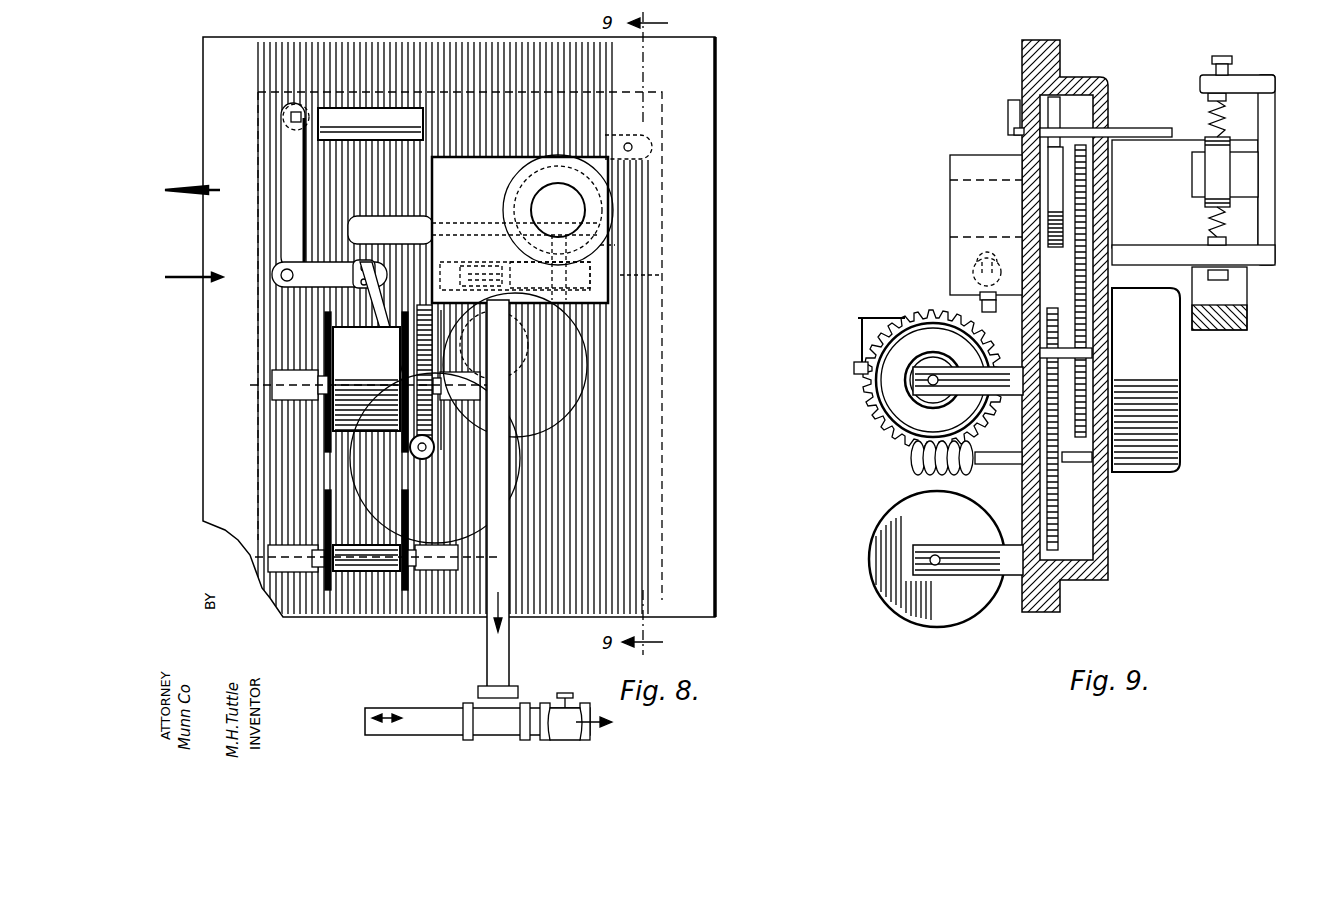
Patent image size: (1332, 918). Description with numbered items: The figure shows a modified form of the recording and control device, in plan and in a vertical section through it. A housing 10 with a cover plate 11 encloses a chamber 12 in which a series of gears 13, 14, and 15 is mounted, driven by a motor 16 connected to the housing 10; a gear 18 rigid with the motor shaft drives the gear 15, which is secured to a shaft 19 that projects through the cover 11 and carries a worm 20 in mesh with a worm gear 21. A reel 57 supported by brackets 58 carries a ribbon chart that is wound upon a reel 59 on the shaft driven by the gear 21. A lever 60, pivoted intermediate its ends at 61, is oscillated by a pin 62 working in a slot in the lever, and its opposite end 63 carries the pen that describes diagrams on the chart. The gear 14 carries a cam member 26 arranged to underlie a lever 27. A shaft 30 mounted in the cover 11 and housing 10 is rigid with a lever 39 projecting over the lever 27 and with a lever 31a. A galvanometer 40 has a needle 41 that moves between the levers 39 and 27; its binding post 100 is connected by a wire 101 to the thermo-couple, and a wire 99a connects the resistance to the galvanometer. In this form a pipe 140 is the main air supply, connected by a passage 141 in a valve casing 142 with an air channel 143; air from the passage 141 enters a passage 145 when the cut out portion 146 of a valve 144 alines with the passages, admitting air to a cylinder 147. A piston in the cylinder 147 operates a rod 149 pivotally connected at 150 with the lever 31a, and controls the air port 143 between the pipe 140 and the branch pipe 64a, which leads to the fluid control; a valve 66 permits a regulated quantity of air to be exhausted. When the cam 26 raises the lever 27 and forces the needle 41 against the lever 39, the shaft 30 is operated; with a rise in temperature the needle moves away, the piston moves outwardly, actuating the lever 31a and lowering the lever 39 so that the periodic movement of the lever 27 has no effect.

In FIG. 9, the housing 10 is at (1112, 565).
In FIG. 9, the cover plate 11 is at (1022, 76).
In FIG. 9, the chamber 12 is at (1088, 522).
In FIG. 9, the gear 13 is at (1085, 385).
In FIG. 9, the gear 14 is at (1096, 212).
In FIG. 9, the gear 15 is at (1056, 515).
In FIG. 9, the motor 16 is at (1182, 365).
In FIG. 9, the gear 18 is at (1056, 312).
In FIG. 9, the shaft 19 is at (1010, 462).
In FIG. 8, the worm 20 is at (434, 455).
In FIG. 9, the worm 20 is at (915, 470).
In FIG. 8, the worm gear 21 is at (440, 316).
In FIG. 9, the worm gear 21 is at (898, 424).
In FIG. 8, the cam member 26 is at (610, 240).
In FIG. 9, the cam member 26 is at (1055, 168).
In FIG. 8, the lever 27 is at (556, 112).
In FIG. 9, the lever 27 is at (1092, 74).
In FIG. 8, the shaft 30 is at (288, 118).
In FIG. 9, the shaft 30 is at (1118, 102).
In FIG. 8, the lever 31a is at (290, 219).
In FIG. 9, the lever 31a is at (1010, 122).
In FIG. 8, the lever 39 is at (362, 125).
In FIG. 9, the galvanometer 40 is at (1250, 178).
In FIG. 8, the needle 41 is at (425, 128).
In FIG. 9, the needle 41 is at (1128, 128).
In FIG. 8, the reel 57 is at (370, 568).
In FIG. 9, the reel 57 is at (902, 622).
In FIG. 9, the brackets 58 is at (935, 570).
In FIG. 8, the reel 59 is at (330, 385).
In FIG. 8, the lever 60 is at (366, 382).
In FIG. 9, the lever 60 is at (858, 320).
In FIG. 8, the pivot 61 is at (367, 322).
In FIG. 9, the pivot 61 is at (1012, 308).
In FIG. 8, the pin 62 is at (390, 230).
In FIG. 8, the pen end of lever 63 is at (345, 316).
In FIG. 9, the pen end of lever 63 is at (856, 372).
In FIG. 8, the branch pipe 64a is at (490, 656).
In FIG. 8, the valve 66 is at (560, 728).
In FIG. 9, the wire 99a is at (1232, 84).
In FIG. 8, the binding post 100 is at (219, 279).
In FIG. 8, the wire 101 is at (182, 290).
In FIG. 9, the wire 101 is at (1224, 268).
In FIG. 8, the pipe 140 is at (432, 210).
In FIG. 8, the passage 141 is at (516, 216).
In FIG. 8, the valve casing 142 is at (520, 230).
In FIG. 9, the valve casing 142 is at (952, 210).
In FIG. 8, the air channel 143 is at (515, 262).
In FIG. 8, the valve 144 is at (580, 210).
In FIG. 8, the passage 145 is at (612, 255).
In FIG. 8, the cut out portion 146 is at (638, 218).
In FIG. 8, the cylinder 147 is at (655, 208).
In FIG. 9, the cylinder 147 is at (975, 275).
In FIG. 8, the rod 149 is at (310, 282).
In FIG. 8, the pivot connection 150 is at (285, 281).